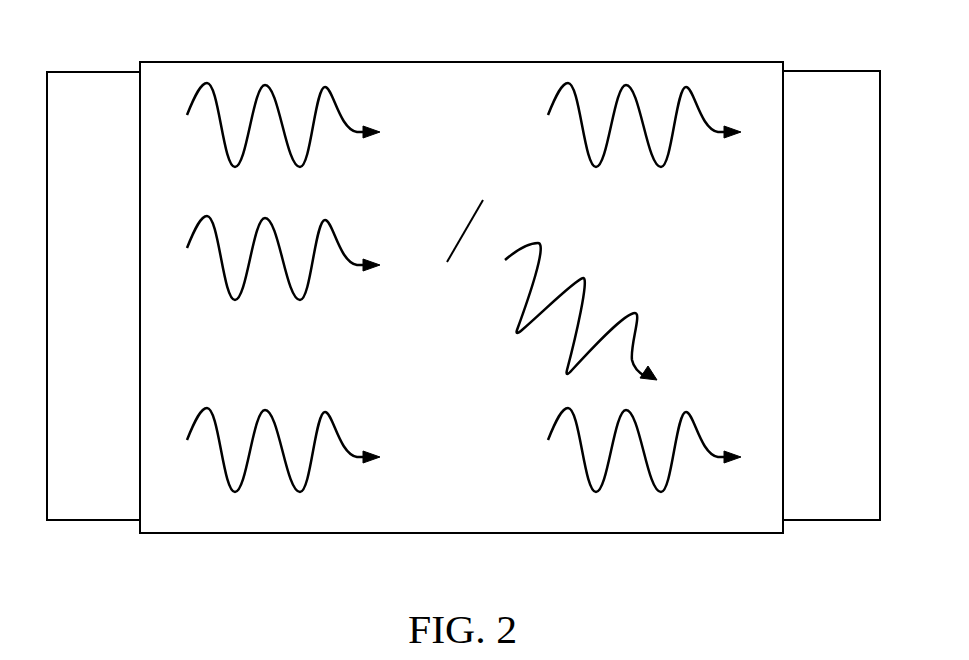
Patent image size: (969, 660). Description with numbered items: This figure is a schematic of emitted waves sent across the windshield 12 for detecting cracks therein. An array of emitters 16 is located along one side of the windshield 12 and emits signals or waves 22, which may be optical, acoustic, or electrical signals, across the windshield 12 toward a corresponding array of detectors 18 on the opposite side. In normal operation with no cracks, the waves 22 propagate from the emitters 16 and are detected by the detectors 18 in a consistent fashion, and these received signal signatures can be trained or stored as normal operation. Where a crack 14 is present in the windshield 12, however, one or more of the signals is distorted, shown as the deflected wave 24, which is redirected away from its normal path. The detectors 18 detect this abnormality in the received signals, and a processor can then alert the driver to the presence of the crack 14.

The windshield 12 is at (453, 500).
The crack 14 is at (482, 202).
The array of emitters 16 is at (102, 98).
The array of detectors 18 is at (840, 98).
The waves 22 is at (327, 90).
The distorted wave 24 is at (632, 337).